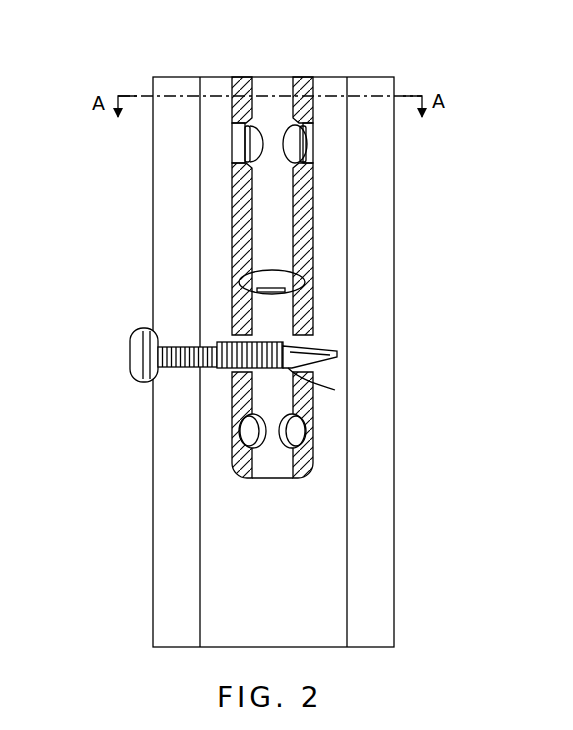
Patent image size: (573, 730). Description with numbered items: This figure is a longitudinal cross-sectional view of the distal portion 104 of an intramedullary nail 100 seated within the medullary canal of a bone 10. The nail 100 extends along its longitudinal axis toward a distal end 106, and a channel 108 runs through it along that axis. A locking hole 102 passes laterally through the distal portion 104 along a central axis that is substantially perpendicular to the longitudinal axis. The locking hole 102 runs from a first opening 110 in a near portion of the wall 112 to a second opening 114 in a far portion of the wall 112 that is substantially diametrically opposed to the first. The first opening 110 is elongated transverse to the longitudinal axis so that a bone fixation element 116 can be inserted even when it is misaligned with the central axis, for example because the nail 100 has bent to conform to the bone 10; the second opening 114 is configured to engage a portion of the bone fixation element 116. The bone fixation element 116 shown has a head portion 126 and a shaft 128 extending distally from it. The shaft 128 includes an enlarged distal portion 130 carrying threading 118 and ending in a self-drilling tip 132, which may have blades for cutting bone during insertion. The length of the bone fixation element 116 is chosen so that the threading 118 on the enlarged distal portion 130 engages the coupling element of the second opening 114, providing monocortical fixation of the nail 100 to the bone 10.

The bone 10 is at (376, 77).
The intramedullary nail 100 is at (273, 265).
The locking hole 102 is at (304, 95).
The distal portion 104 is at (172, 296).
The distal end 106 is at (240, 465).
The channel 108 is at (376, 174).
The first opening 110 is at (240, 147).
The wall 112 is at (315, 228).
The second opening 114 is at (305, 145).
The bone fixation element 116 is at (244, 360).
The threading 118 is at (300, 333).
The head portion 126 is at (130, 358).
The shaft 128 is at (182, 368).
The enlarged distal portion 130 is at (298, 390).
The self-drilling tip 132 is at (325, 363).